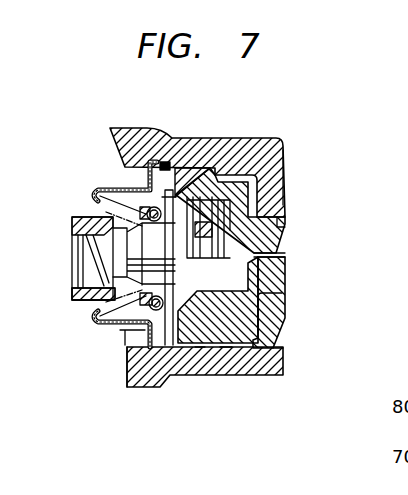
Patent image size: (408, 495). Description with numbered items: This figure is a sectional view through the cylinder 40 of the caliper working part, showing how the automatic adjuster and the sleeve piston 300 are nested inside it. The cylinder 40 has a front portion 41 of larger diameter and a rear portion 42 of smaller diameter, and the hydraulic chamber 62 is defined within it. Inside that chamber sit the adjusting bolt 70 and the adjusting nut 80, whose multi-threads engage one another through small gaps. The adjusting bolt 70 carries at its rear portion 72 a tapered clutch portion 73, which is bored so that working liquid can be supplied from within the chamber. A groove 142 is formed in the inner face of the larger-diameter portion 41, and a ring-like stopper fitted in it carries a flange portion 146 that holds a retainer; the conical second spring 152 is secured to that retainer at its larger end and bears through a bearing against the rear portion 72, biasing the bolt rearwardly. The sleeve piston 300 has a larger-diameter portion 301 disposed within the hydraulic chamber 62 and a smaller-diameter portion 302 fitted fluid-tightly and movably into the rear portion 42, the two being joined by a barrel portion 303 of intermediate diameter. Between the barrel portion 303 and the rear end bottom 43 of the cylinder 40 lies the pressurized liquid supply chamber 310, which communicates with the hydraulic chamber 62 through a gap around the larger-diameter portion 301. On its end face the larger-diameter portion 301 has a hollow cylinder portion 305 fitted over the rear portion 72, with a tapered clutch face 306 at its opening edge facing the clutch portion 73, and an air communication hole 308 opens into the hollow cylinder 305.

The cylinder 40 is at (203, 143).
The front portion of larger diameter 41 is at (176, 160).
The rear portion of smaller diameter 42 is at (287, 219).
The rear end bottom 43 is at (268, 350).
The hydraulic chamber 62 is at (170, 378).
The adjusting bolt 70 is at (72, 250).
The rear portion of the adjusting bolt 72 is at (230, 178).
The tapered clutch portion 73 is at (180, 374).
The adjusting nut 80 is at (72, 293).
The groove 142 is at (127, 352).
The flange portion 146 is at (100, 322).
The conical second spring 152 is at (98, 306).
The sleeve piston 300 is at (262, 162).
The larger-diameter portion of the sleeve piston 301 is at (200, 372).
The smaller-diameter portion of the sleeve piston 302 is at (286, 312).
The barrel portion 303 is at (258, 376).
The hollow cylinder portion 305 is at (225, 372).
The tapered clutch face 306 is at (125, 183).
The air communication hole 308 is at (282, 255).
The pressurized liquid supply chamber 310 is at (263, 166).